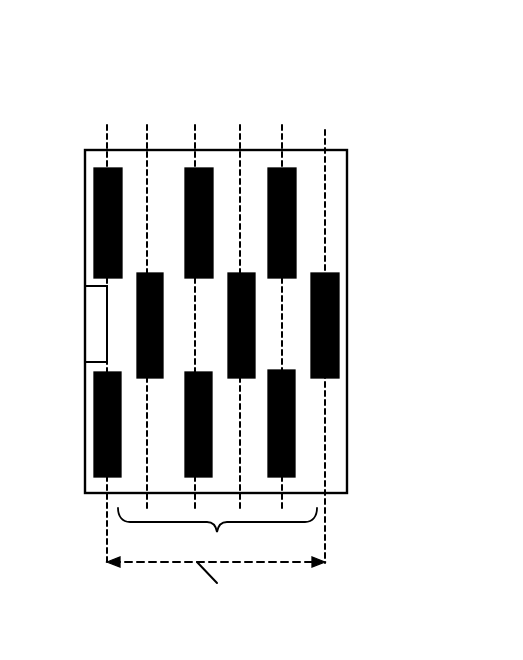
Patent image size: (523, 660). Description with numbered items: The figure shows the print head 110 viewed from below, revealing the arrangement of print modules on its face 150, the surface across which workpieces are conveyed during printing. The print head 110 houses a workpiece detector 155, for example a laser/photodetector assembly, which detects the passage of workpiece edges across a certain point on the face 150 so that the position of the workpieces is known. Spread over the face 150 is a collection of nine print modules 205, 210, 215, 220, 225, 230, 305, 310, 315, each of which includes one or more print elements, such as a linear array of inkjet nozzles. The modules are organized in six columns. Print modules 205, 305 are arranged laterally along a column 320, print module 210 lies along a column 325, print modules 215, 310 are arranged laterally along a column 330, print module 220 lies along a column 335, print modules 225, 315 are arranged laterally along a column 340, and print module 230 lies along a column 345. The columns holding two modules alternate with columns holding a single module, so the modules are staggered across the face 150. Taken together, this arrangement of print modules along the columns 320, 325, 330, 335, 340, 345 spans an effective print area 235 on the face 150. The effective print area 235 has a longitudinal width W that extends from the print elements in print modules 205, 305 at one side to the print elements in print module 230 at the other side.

The print head 110 is at (349, 76).
The face 150 is at (335, 193).
The workpiece detector 155 is at (92, 333).
The print module 205 is at (95, 202).
The print module 210 is at (163, 328).
The print module 215 is at (186, 202).
The print module 220 is at (255, 328).
The print module 225 is at (269, 202).
The print module 230 is at (338, 330).
The effective print area 235 is at (217, 530).
The print module 305 is at (95, 426).
The print module 310 is at (186, 428).
The print module 315 is at (269, 427).
The column 320 is at (107, 113).
The column 325 is at (147, 112).
The column 330 is at (195, 112).
The column 335 is at (240, 112).
The column 340 is at (282, 110).
The column 345 is at (325, 115).